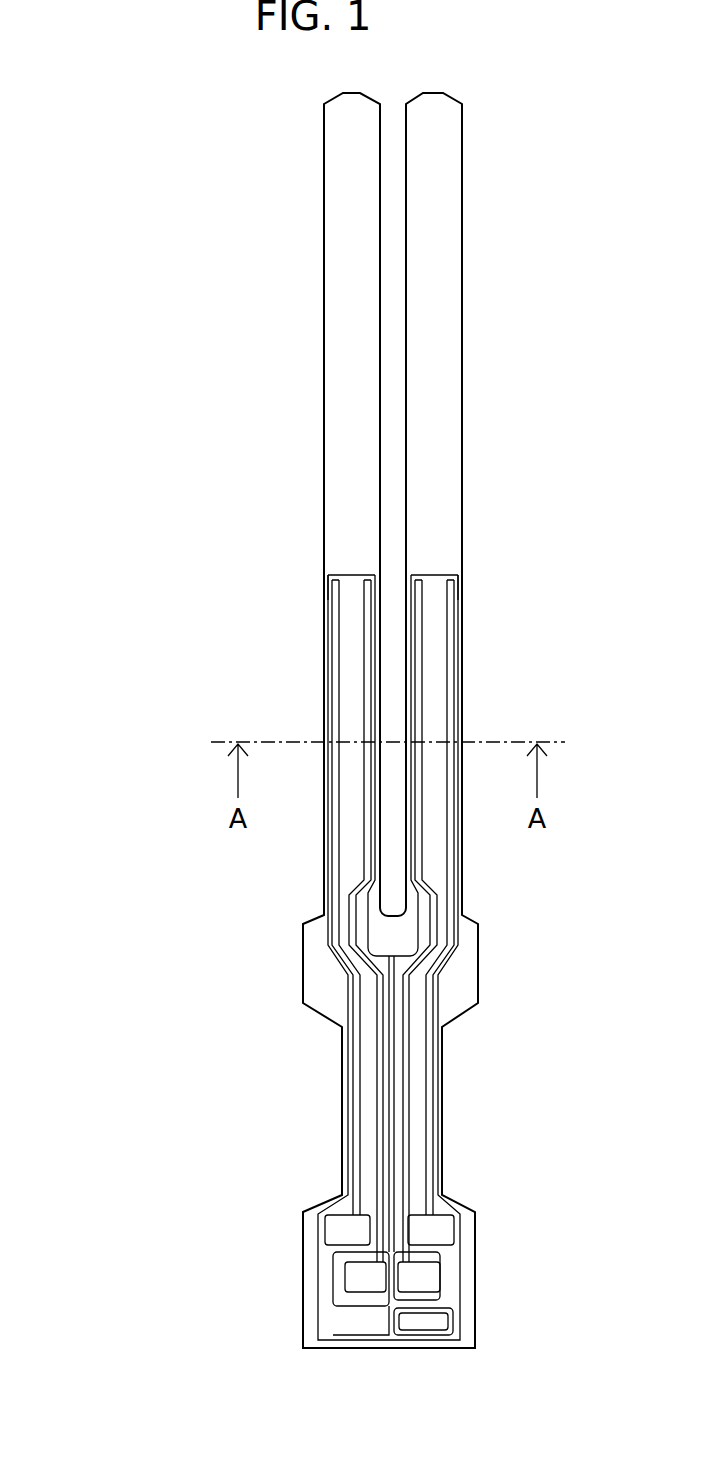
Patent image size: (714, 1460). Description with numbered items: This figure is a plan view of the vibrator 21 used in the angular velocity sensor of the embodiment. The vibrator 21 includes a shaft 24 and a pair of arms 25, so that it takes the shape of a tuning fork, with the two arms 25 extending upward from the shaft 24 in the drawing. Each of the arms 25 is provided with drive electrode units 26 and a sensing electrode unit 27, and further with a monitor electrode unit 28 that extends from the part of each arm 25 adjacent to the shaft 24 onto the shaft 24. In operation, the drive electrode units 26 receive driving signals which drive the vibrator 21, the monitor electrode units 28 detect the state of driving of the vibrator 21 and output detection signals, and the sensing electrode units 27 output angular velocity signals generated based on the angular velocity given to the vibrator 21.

The vibrator 21 is at (102, 102).
The shaft 24 is at (207, 939).
The arms 25 is at (208, 100).
The drive electrode units 26 is at (363, 578).
The sensing electrode unit 27 is at (348, 652).
The monitor electrode unit 28 is at (368, 925).